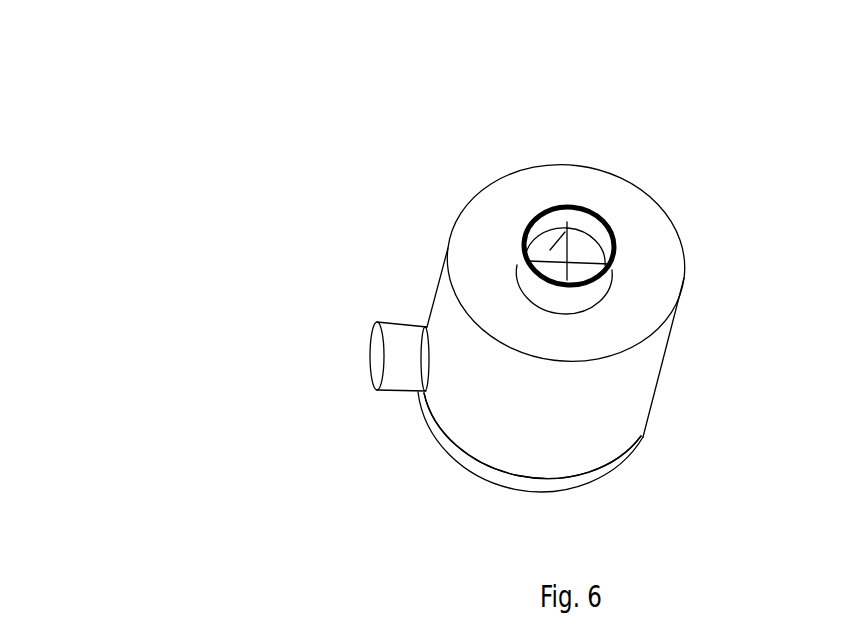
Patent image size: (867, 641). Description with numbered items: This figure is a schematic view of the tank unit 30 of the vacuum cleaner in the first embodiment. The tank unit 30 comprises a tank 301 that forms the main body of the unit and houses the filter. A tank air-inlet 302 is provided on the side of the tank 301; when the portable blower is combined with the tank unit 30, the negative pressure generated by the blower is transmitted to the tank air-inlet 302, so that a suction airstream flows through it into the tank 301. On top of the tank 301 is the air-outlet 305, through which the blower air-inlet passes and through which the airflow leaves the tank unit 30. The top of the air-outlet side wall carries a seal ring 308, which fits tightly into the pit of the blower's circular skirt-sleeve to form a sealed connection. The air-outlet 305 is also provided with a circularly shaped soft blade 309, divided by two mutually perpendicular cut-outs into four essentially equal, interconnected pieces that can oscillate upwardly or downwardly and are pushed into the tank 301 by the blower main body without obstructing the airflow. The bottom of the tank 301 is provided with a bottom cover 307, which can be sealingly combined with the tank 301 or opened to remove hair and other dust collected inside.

The tank unit 30 is at (114, 92).
The tank 301 is at (585, 428).
The tank air-inlet 302 is at (372, 358).
The air-outlet 305 is at (592, 233).
The bottom cover 307 is at (507, 485).
The seal ring 308 is at (613, 270).
The soft blade 309 is at (566, 213).